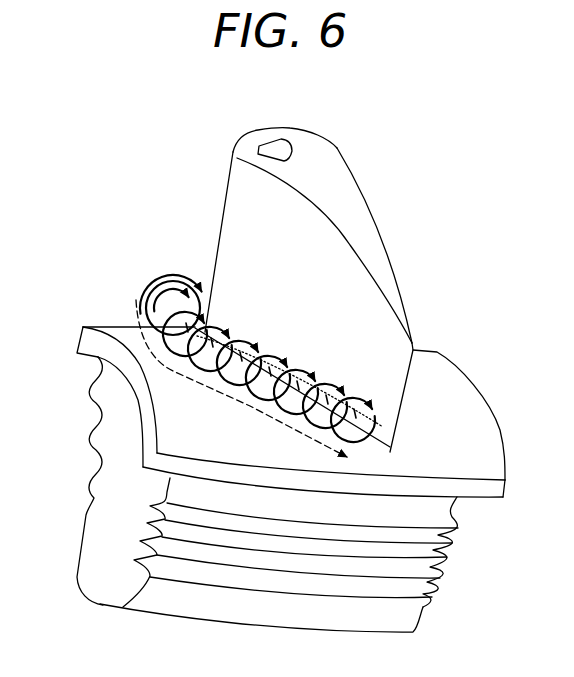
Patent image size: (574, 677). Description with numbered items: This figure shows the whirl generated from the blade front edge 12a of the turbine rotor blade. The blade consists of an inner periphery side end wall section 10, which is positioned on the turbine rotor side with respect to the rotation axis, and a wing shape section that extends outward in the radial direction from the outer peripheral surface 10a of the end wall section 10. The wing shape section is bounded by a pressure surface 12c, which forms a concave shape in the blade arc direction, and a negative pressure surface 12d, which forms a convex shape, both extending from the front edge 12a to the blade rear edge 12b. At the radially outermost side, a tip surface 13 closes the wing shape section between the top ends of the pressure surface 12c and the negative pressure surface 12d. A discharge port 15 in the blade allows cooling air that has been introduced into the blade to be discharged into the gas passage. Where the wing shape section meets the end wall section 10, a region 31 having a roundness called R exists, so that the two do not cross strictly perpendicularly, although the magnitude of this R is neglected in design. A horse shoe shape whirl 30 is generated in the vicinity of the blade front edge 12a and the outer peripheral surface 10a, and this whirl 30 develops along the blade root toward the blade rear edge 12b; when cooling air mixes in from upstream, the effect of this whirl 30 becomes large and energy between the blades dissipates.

The inner periphery side end wall section 10 is at (107, 352).
The outer peripheral surface of the end wall section 10a is at (100, 325).
The blade front edge 12a is at (204, 242).
The blade rear edge 12b is at (420, 397).
The pressure surface 12c is at (300, 227).
The negative pressure surface 12d is at (328, 140).
The tip surface 13 is at (360, 212).
The discharge port 15 is at (271, 150).
The horse shoe shape whirl 30 is at (148, 293).
The region having roundness (R) 31 is at (393, 442).